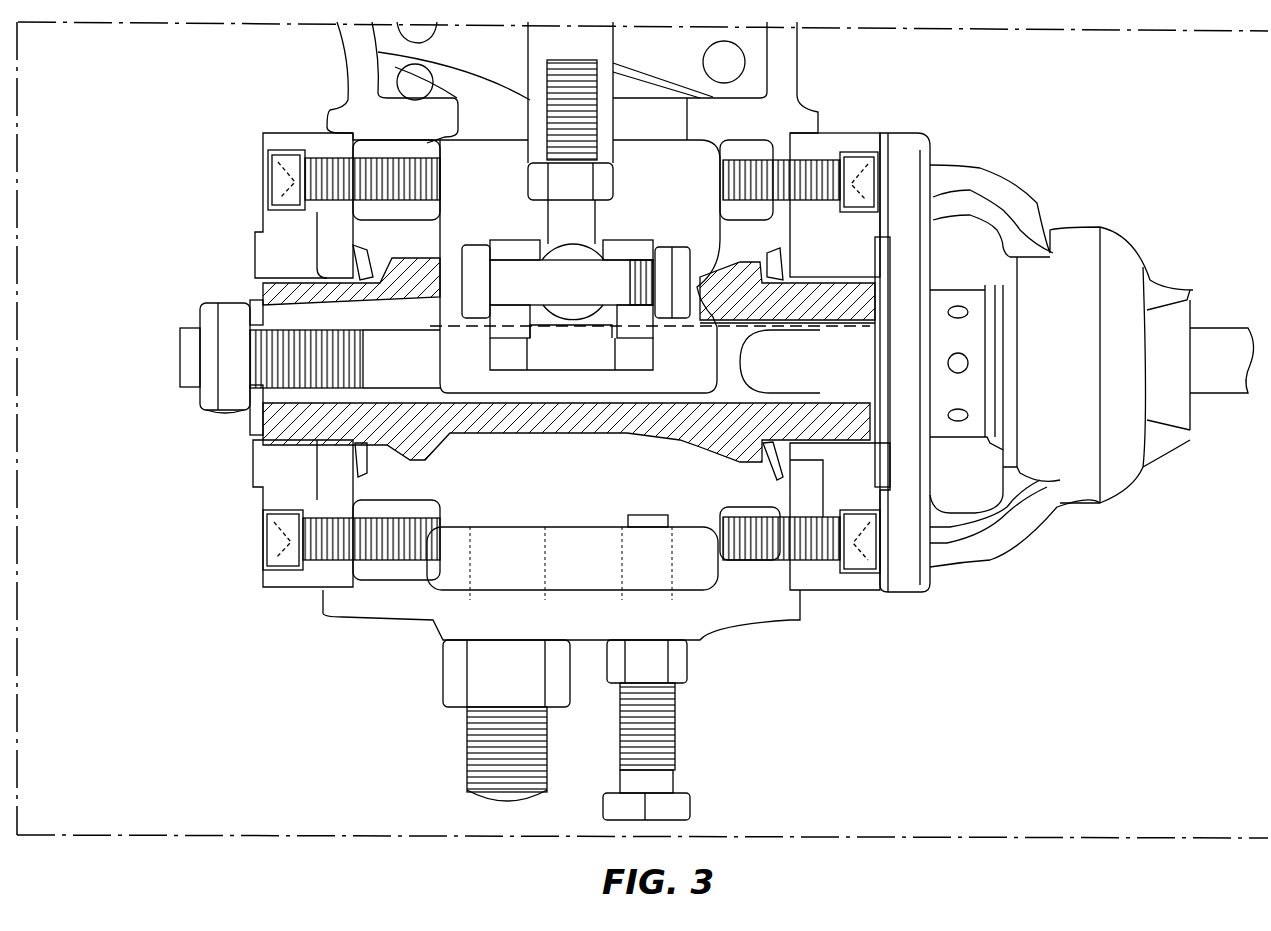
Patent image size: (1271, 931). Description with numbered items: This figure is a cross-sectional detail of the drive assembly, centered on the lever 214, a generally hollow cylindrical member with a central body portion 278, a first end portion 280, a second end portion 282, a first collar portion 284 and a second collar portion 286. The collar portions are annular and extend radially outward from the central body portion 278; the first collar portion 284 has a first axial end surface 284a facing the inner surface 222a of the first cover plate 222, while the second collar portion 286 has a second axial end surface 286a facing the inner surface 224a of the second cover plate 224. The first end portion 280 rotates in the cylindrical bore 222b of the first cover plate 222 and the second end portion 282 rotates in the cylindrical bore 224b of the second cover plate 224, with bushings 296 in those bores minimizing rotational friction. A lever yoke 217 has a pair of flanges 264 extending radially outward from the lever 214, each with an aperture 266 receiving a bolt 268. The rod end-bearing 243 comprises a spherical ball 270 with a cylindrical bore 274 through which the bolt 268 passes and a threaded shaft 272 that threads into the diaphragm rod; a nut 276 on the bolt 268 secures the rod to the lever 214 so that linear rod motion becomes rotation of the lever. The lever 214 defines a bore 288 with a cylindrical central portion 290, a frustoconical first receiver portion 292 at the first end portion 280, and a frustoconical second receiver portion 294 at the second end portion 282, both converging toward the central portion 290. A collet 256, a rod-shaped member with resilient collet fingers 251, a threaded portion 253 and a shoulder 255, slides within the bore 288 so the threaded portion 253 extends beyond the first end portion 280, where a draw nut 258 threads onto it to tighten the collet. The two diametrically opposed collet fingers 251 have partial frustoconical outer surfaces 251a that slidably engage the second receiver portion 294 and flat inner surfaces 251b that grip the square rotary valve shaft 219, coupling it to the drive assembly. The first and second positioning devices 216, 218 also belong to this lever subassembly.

The lever 214 is at (478, 415).
The first positioning device 216 is at (267, 547).
The lever yoke 217 is at (679, 236).
The second positioning device 218 is at (840, 262).
The rotary valve shaft 219 is at (1222, 335).
The first cover plate 222 is at (278, 588).
The inner surface of first cover plate 222a is at (292, 197).
The cylindrical bore of first cover plate 222b is at (280, 273).
The second cover plate 224 is at (912, 575).
The inner surface of second cover plate 224a is at (835, 432).
The cylindrical bore of second cover plate 224b is at (870, 320).
The rod end-bearing 243 is at (545, 243).
The collet fingers 251 is at (937, 507).
The outer surfaces of collet fingers 251a is at (920, 330).
The inner surfaces of collet fingers 251b is at (873, 403).
The threaded portion 253 is at (293, 353).
The shoulder 255 is at (752, 403).
The collet 256 is at (352, 458).
The draw nut 258 is at (220, 408).
The flanges 264 is at (513, 247).
The aperture 266 is at (400, 292).
The bolt 268 is at (610, 260).
The spherical ball 270 is at (505, 178).
The threaded shaft 272 is at (570, 110).
The cylindrical bore 274 is at (593, 302).
The nut 276 is at (790, 248).
The central body portion 278 is at (638, 415).
The first end portion 280 is at (385, 405).
The second end portion 282 is at (851, 545).
The first collar portion 284 is at (408, 500).
The first axial end surface 284a is at (370, 212).
The second collar portion 286 is at (745, 445).
The second axial end surface 286a is at (880, 238).
The bore 288 is at (519, 392).
The central portion 290 is at (668, 397).
The first receiver portion 292 is at (293, 400).
The second receiver portion 294 is at (920, 350).
The bushings 296 is at (320, 445).